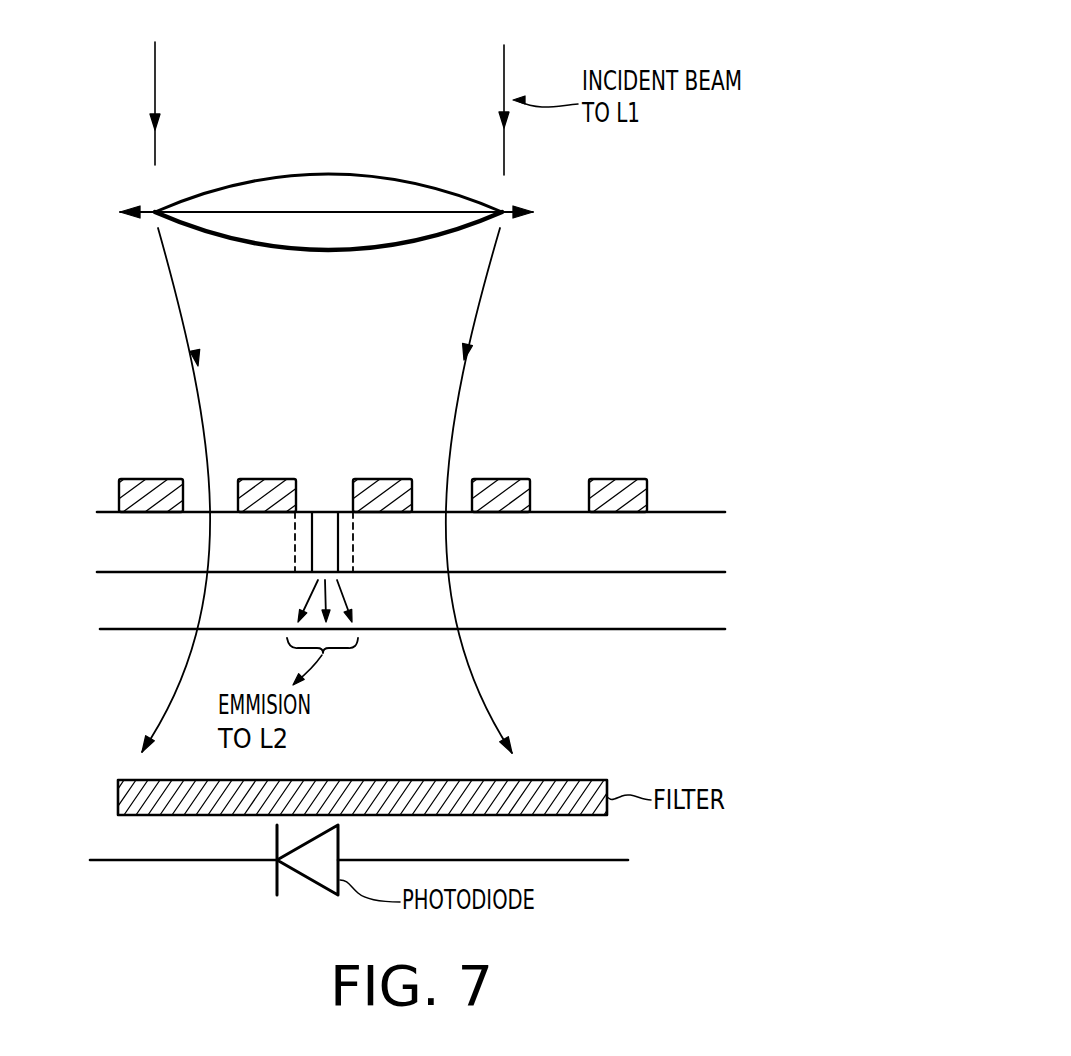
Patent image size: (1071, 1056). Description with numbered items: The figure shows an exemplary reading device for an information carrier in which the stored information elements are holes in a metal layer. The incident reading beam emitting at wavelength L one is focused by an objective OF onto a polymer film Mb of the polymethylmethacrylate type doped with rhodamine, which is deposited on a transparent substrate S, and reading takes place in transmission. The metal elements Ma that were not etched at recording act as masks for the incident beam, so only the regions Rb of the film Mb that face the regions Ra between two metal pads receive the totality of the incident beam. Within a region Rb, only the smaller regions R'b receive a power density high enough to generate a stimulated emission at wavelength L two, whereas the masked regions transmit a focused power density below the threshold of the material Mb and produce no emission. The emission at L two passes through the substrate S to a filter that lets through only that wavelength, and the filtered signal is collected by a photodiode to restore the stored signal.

The objective OF is at (352, 212).
The regions between two metal pads Ra is at (325, 488).
The metal elements (masks) Ma is at (522, 475).
The polymer film Mb is at (669, 548).
The regions of the material facing the regions between metal pads Rb is at (300, 553).
The regions receiving sufficient power density R'b is at (374, 564).
The substrate S is at (692, 608).